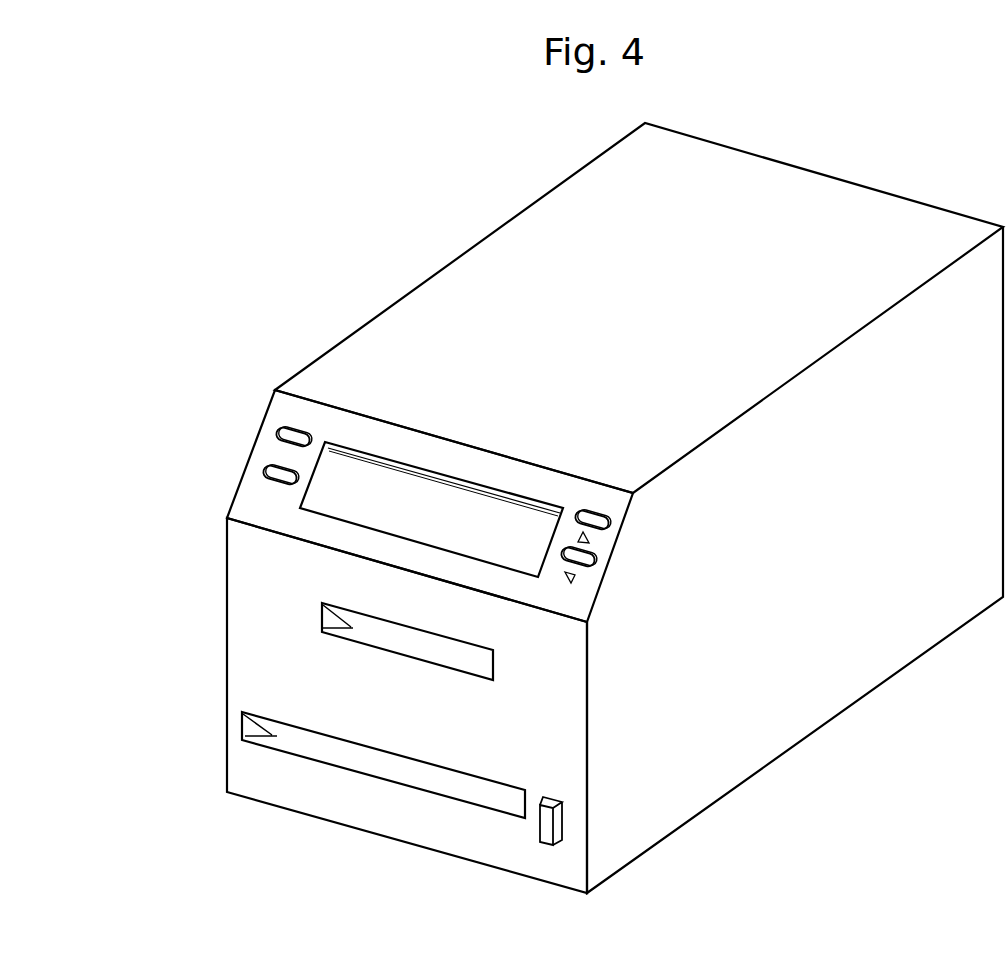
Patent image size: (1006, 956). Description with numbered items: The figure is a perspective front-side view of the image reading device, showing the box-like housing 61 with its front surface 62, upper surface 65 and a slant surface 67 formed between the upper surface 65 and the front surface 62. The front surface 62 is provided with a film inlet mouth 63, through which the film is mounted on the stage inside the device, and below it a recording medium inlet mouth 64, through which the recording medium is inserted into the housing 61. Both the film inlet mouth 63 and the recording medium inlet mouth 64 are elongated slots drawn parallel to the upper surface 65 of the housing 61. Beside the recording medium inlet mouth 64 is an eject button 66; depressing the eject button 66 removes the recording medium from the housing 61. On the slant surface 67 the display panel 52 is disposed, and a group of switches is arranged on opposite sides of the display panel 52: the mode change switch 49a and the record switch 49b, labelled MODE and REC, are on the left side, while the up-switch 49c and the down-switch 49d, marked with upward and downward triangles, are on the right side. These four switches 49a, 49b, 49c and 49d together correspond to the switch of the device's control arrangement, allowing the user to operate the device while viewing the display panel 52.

The housing 61 is at (478, 238).
The upper surface 65 is at (400, 320).
The slant surface 67 is at (402, 442).
The display panel 52 is at (490, 518).
The mode change switch 49a is at (277, 425).
The record switch 49b is at (260, 462).
The up-switch 49c is at (598, 513).
The down-switch 49d is at (584, 549).
The front surface 62 is at (248, 667).
The film inlet mouth 63 is at (323, 628).
The recording medium inlet mouth 64 is at (243, 736).
The eject button 66 is at (548, 829).